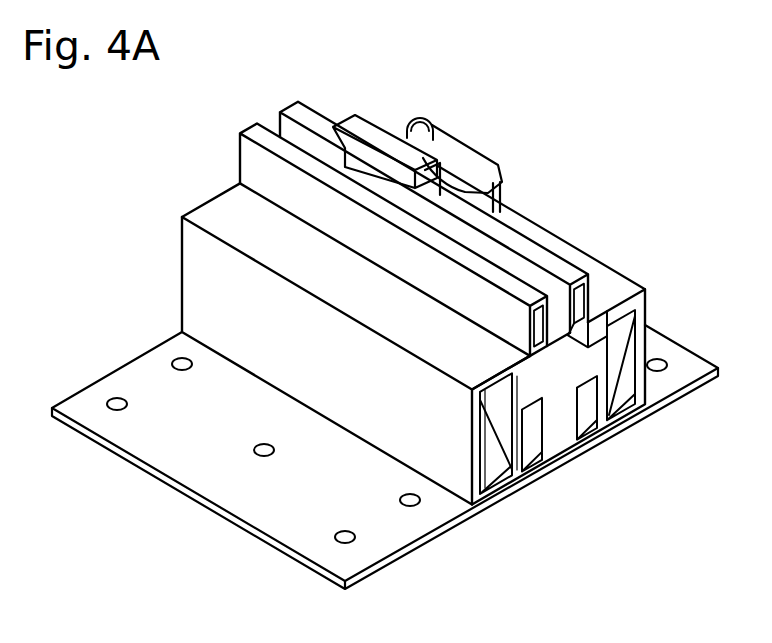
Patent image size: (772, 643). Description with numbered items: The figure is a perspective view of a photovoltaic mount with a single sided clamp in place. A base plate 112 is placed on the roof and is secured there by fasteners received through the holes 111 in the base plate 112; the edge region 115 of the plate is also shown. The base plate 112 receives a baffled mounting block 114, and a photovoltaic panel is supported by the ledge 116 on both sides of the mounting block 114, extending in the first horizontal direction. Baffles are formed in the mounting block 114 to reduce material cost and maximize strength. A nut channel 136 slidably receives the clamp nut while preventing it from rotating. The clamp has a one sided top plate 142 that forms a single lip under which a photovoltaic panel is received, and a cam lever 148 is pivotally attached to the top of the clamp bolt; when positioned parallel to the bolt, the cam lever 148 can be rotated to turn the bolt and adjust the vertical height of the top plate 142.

The holes 111 is at (666, 371).
The base plate 112 is at (690, 358).
The baffled mounting block 114 is at (182, 292).
The plate edge 115 is at (280, 521).
The ledge 116 is at (237, 212).
The nut channel 136 is at (578, 360).
The one sided top plate 142 is at (349, 112).
The cam lever 148 is at (467, 168).